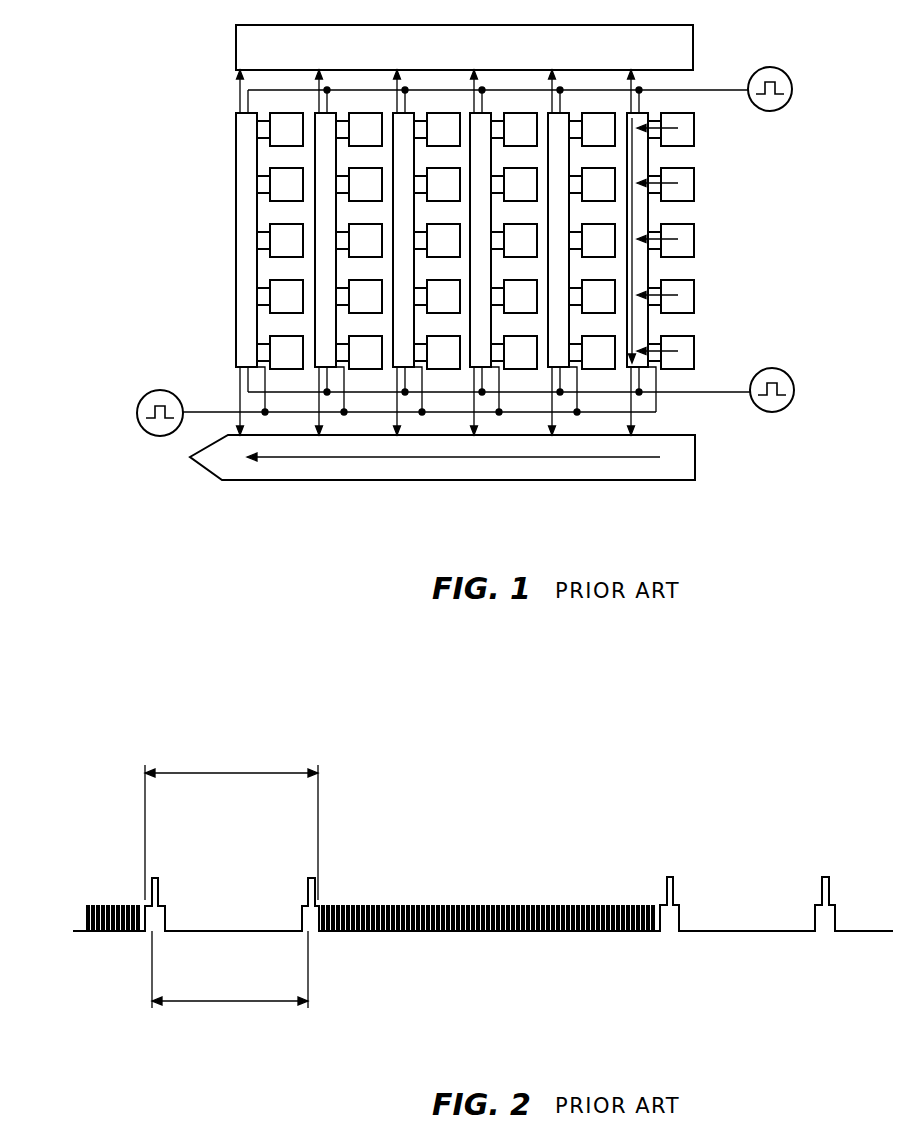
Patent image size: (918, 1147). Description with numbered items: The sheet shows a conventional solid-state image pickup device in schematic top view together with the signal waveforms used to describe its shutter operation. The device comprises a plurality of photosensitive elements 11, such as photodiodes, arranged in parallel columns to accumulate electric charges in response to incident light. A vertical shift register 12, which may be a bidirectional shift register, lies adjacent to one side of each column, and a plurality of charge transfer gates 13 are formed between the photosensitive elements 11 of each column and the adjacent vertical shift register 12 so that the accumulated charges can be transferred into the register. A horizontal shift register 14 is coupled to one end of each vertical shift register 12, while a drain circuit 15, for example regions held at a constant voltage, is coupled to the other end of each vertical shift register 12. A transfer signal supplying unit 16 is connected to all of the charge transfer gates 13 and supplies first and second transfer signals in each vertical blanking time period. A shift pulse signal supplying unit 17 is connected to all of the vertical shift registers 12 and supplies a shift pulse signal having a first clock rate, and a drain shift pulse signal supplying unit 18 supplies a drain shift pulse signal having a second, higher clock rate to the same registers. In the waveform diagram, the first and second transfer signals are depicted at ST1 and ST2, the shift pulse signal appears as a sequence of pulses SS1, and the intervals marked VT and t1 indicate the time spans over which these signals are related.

In FIG. 1, the photosensitive element 11 is at (694, 240).
In FIG. 1, the vertical shift register 12 is at (240, 167).
In FIG. 1, the charge transfer gate 13 is at (268, 250).
In FIG. 1, the horizontal shift register 14 is at (565, 482).
In FIG. 1, the drain circuit 15 is at (236, 50).
In FIG. 1, the transfer signal supplying unit 16 is at (137, 414).
In FIG. 1, the shift pulse signal supplying unit 17 is at (792, 90).
In FIG. 1, the drain shift pulse signal supplying unit 18 is at (794, 390).
In FIG. 2, the vertical period VT is at (231, 824).
In FIG. 2, the time interval t1 is at (230, 969).
In FIG. 2, the first transfer signal ST1 is at (152, 878).
In FIG. 2, the second transfer signal ST2 is at (318, 878).
In FIG. 2, the shift pulse signal SS1 is at (487, 900).